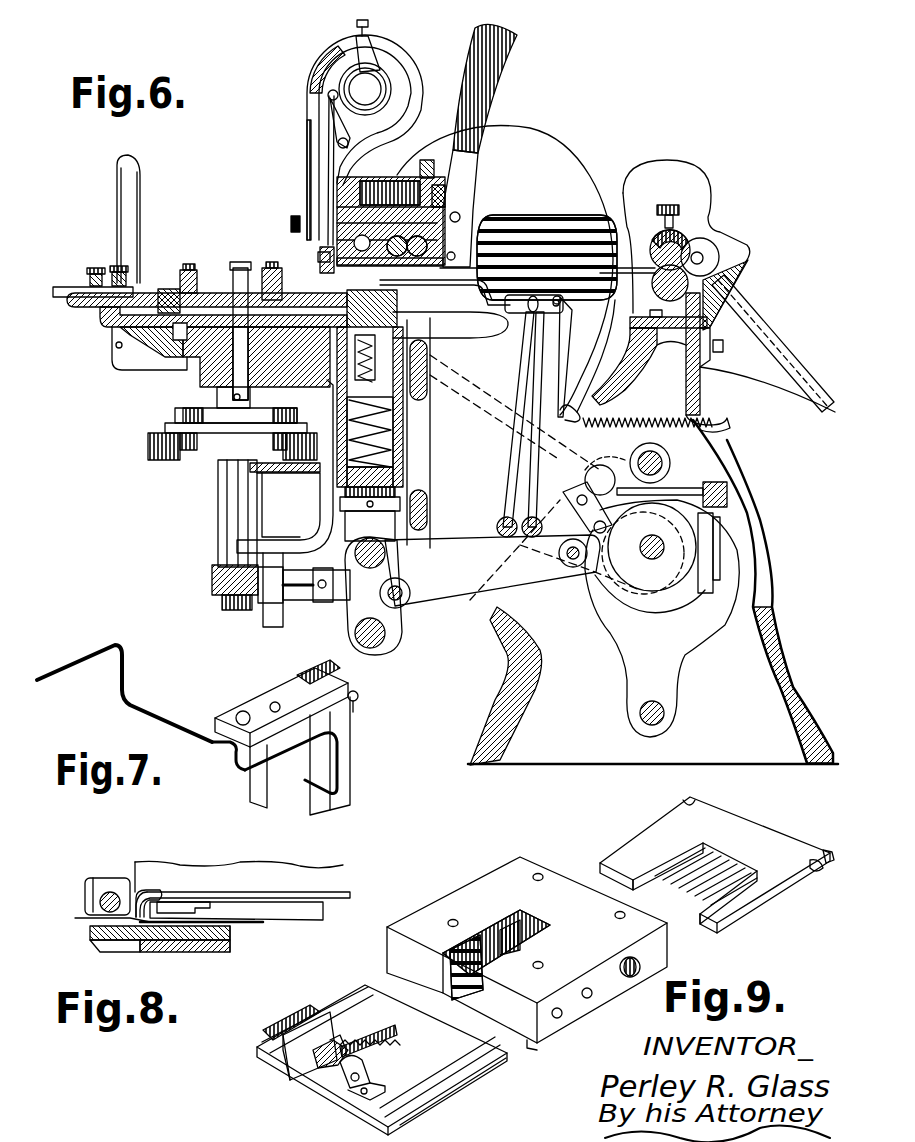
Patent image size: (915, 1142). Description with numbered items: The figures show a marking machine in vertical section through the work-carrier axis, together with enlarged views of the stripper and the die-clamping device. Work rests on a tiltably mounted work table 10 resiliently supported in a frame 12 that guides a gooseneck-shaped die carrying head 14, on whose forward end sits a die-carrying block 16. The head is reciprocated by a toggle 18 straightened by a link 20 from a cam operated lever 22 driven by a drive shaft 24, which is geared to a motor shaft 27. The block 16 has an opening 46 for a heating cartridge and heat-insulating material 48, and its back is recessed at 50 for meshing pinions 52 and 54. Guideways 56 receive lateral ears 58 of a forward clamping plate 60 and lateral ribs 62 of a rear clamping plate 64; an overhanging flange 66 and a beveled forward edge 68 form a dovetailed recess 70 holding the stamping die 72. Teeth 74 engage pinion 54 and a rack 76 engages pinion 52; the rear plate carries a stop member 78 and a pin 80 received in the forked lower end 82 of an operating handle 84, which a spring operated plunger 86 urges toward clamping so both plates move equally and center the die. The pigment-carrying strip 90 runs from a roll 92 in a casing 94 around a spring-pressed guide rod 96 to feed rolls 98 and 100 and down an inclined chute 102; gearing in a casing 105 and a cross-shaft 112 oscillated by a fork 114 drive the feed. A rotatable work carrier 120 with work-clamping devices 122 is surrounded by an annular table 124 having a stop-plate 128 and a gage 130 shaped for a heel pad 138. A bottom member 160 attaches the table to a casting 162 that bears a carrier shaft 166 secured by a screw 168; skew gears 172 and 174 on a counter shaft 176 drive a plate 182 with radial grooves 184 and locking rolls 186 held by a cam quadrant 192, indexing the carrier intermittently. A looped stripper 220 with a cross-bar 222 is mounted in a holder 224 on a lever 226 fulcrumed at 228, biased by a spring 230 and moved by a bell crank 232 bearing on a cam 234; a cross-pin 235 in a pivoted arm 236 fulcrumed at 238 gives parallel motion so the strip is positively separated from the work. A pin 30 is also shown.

In FIG. 6, the work table 10 is at (450, 325).
In FIG. 8, the work table 10 is at (217, 950).
In FIG. 6, the frame 12 is at (402, 430).
In FIG. 6, the die carrying head 14 is at (588, 172).
In FIG. 6, the die-carrying block 16 is at (392, 180).
In FIG. 8, the die-carrying block 16 is at (187, 882).
In FIG. 9, the die-carrying block 16 is at (493, 880).
In FIG. 6, the toggle 18 is at (393, 620).
In FIG. 6, the link 20 is at (520, 577).
In FIG. 6, the cam operated lever 22 is at (702, 627).
In FIG. 6, the drive shaft 24 is at (655, 555).
In FIG. 6, the motor shaft 27 is at (668, 462).
In FIG. 6, the pin 30 is at (400, 548).
In FIG. 6, the opening 46 is at (326, 192).
In FIG. 6, the heat-insulating material 48 is at (462, 185).
In FIG. 9, the recess 50 is at (507, 920).
In FIG. 6, the pinion 52 is at (525, 190).
In FIG. 9, the pinion 52 is at (473, 947).
In FIG. 9, the pinion 54 is at (525, 945).
In FIG. 9, the recessed guideways 56 is at (531, 1043).
In FIG. 9, the lateral ears 58 is at (827, 852).
In FIG. 9, the forward clamping plate 60 is at (747, 833).
In FIG. 9, the lateral ribs 62 is at (437, 1093).
In FIG. 6, the rear clamping plate 64 is at (445, 268).
In FIG. 8, the rear clamping plate 64 is at (273, 910).
In FIG. 9, the rear clamping plate 64 is at (350, 1020).
In FIG. 8, the overhanging flange 66 is at (160, 903).
In FIG. 9, the overhanging flange 66 is at (815, 872).
In FIG. 9, the beveled forward edge 68 is at (500, 1060).
In FIG. 6, the dovetailed recess 70 is at (294, 222).
In FIG. 6, the stamping die 72 is at (321, 254).
In FIG. 8, the stamping die 72 is at (193, 910).
In FIG. 9, the teeth 74 is at (727, 883).
In FIG. 6, the rack 76 is at (443, 232).
In FIG. 9, the rack 76 is at (377, 1027).
In FIG. 9, the stop member 78 is at (307, 1037).
In FIG. 6, the pin 80 is at (495, 268).
In FIG. 9, the pin 80 is at (330, 1062).
In FIG. 6, the forked lower end 82 is at (467, 237).
In FIG. 6, the operating handle 84 is at (514, 42).
In FIG. 6, the spring operated plunger 86 is at (473, 210).
In FIG. 6, the pigment-carrying strip 90 is at (327, 116).
In FIG. 8, the pigment-carrying strip 90 is at (95, 880).
In FIG. 6, the roll 92 is at (372, 84).
In FIG. 6, the casing 94 is at (418, 85).
In FIG. 6, the guide rod 96 is at (323, 276).
In FIG. 8, the guide rod 96 is at (113, 896).
In FIG. 6, the feed roll 98 is at (688, 242).
In FIG. 6, the feed roll 100 is at (705, 270).
In FIG. 6, the inclined chute 102 is at (740, 317).
In FIG. 6, the casing 105 is at (683, 178).
In FIG. 6, the cross-shaft 112 is at (700, 393).
In FIG. 6, the fork 114 is at (700, 473).
In FIG. 6, the work carrier 120 is at (113, 323).
In FIG. 8, the work carrier 120 is at (97, 940).
In FIG. 6, the work-clamping devices 122 is at (173, 283).
In FIG. 6, the annular table 124 is at (87, 307).
In FIG. 6, the stop-plate 128 is at (120, 262).
In FIG. 6, the gage 130 is at (80, 287).
In FIG. 8, the heel pad 138 is at (113, 947).
In FIG. 6, the bottom member 160 is at (140, 350).
In FIG. 6, the casting 162 is at (260, 367).
In FIG. 6, the carrier shaft 166 is at (210, 357).
In FIG. 6, the screw 168 is at (228, 297).
In FIG. 6, the skew gear 172 is at (217, 577).
In FIG. 6, the skew gear 174 is at (240, 607).
In FIG. 6, the counter shaft 176 is at (350, 595).
In FIG. 6, the plate 182 is at (207, 452).
In FIG. 6, the radial grooves 184 is at (250, 418).
In FIG. 6, the locking rolls 186 is at (287, 436).
In FIG. 6, the cam quadrant 192 is at (247, 425).
In FIG. 6, the stripper 220 is at (487, 282).
In FIG. 7, the stripper 220 is at (124, 683).
In FIG. 8, the stripper 220 is at (240, 893).
In FIG. 8, the cross-bar 222 is at (88, 914).
In FIG. 6, the holder 224 is at (512, 303).
In FIG. 7, the holder 224 is at (297, 681).
In FIG. 6, the lever 226 is at (553, 353).
In FIG. 7, the lever 226 is at (350, 753).
In FIG. 6, the fulcrum 228 is at (533, 517).
In FIG. 6, the spring 230 is at (622, 417).
In FIG. 6, the bell crank 232 is at (600, 493).
In FIG. 6, the cam 234 is at (690, 510).
In FIG. 7, the cross-pin 235 is at (350, 723).
In FIG. 6, the pivoted arm 236 is at (516, 420).
In FIG. 7, the pivoted arm 236 is at (273, 780).
In FIG. 6, the fulcrum 238 is at (500, 522).